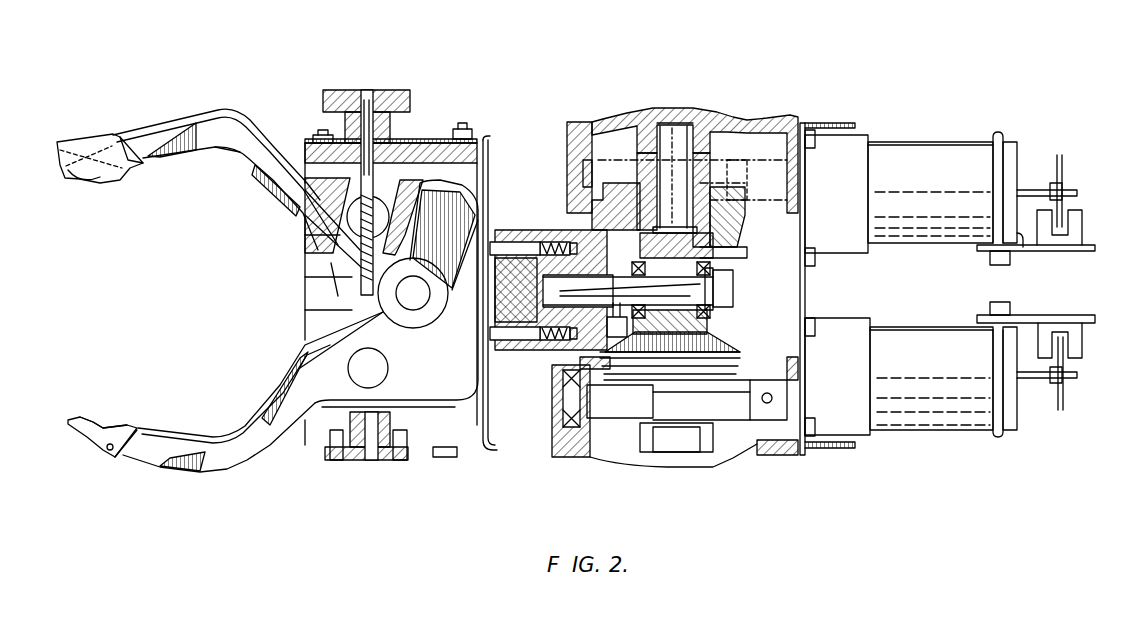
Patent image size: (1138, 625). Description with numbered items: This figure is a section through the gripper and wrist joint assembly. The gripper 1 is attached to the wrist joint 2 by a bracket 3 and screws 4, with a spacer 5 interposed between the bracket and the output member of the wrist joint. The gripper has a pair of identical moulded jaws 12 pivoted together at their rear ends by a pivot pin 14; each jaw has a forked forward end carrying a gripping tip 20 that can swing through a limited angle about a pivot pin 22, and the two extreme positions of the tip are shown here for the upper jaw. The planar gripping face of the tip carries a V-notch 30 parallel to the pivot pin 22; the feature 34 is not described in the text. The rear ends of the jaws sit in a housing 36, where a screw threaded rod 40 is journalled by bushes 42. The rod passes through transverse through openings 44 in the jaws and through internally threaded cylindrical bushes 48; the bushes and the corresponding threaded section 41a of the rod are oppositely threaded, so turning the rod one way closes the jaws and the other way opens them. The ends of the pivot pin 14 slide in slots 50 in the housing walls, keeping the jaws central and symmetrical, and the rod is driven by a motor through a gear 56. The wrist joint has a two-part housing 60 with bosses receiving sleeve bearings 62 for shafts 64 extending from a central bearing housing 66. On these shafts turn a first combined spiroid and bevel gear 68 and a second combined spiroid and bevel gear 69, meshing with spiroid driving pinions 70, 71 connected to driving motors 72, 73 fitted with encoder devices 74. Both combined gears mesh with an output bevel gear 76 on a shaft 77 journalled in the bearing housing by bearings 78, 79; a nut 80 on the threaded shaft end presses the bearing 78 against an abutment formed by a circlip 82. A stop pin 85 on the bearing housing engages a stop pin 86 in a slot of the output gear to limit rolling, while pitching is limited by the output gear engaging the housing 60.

The gripper 1 is at (257, 100).
The wrist joint 2 is at (794, 96).
The bracket 3 is at (494, 148).
The screws 4 is at (507, 243).
The spacer 5 is at (508, 345).
The jaws 12 is at (252, 214).
The pivot pin 14 is at (414, 298).
The gripping tip 20 is at (64, 166).
The pivot pin 22 is at (110, 458).
The V-notch 30 is at (110, 422).
The arm channel 34 is at (203, 163).
The housing 36 is at (420, 150).
The screw threaded rod 40 is at (318, 328).
The threaded section 41a is at (325, 258).
The bushes 42 is at (333, 140).
The transverse through openings 44 is at (318, 278).
The cylindrical bushes 48 is at (350, 370).
The slots 50 is at (320, 300).
The gear 56 is at (393, 100).
The two-part housing 60 is at (724, 118).
The sleeve bearings 62 is at (692, 128).
The shafts 64 is at (661, 124).
The central bearing housing 66 is at (715, 254).
The first combined spiroid and bevel gear 68 is at (742, 222).
The second combined spiroid and bevel gear 69 is at (735, 364).
The spiroid driving pinion 70 is at (768, 128).
The spiroid driving pinion 71 is at (635, 420).
The driving motor 72 is at (926, 152).
The driving motor 73 is at (915, 342).
The encoder devices 74 is at (1080, 197).
The output bevel gear 76 is at (562, 242).
The shaft 77 is at (735, 282).
The bearing 78 is at (728, 306).
The bearing 79 is at (728, 285).
The nut 80 is at (712, 290).
The circlip 82 is at (705, 320).
The stop pin 85 is at (628, 258).
The stop pin 86 is at (620, 337).